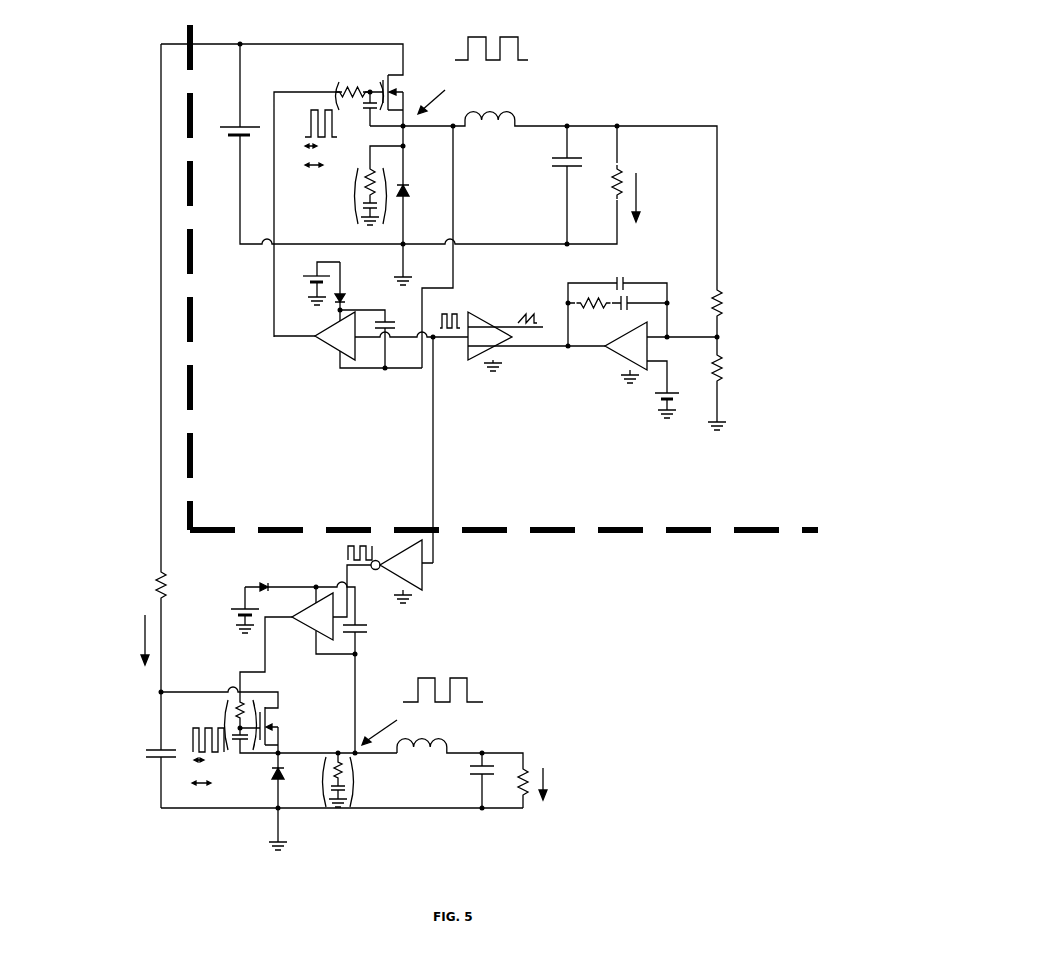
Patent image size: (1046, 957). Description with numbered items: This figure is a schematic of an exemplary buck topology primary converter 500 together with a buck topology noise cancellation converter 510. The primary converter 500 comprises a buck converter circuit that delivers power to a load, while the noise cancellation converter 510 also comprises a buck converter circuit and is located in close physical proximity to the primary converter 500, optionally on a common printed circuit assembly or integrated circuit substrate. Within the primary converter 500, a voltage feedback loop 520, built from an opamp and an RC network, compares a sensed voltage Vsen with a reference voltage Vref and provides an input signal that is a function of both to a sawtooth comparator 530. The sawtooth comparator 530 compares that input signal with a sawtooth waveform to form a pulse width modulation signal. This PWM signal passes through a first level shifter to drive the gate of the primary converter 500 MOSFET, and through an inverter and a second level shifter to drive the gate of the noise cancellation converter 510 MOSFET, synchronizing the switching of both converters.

The primary converter 500 is at (750, 575).
The noise cancellation converter 510 is at (456, 695).
The voltage feedback loop 520 is at (630, 340).
The sawtooth comparator 530 is at (512, 374).